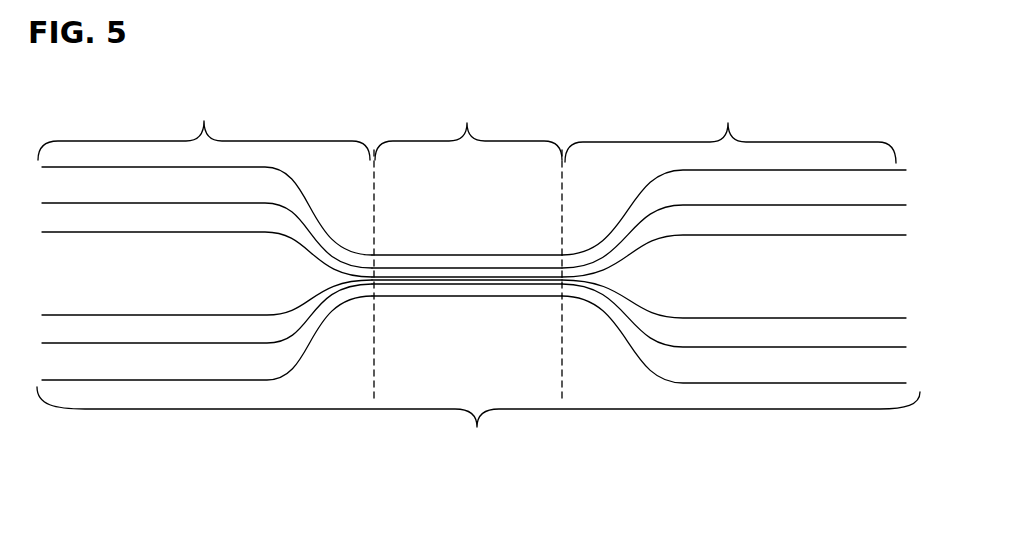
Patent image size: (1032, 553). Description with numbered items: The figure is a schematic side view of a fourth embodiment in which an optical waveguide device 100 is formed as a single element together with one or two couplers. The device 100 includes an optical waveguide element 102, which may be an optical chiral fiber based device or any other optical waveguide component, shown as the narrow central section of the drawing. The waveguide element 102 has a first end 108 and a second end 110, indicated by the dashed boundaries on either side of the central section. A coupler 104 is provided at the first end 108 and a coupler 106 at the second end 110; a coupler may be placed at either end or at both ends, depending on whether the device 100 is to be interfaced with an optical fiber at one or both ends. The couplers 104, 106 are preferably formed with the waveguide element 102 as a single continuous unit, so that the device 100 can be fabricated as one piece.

The optical waveguide device 100 is at (477, 427).
The optical waveguide element 102 is at (467, 123).
The coupler 104 is at (204, 121).
The coupler 106 is at (728, 123).
The first end 108 is at (373, 290).
The second end 110 is at (561, 296).